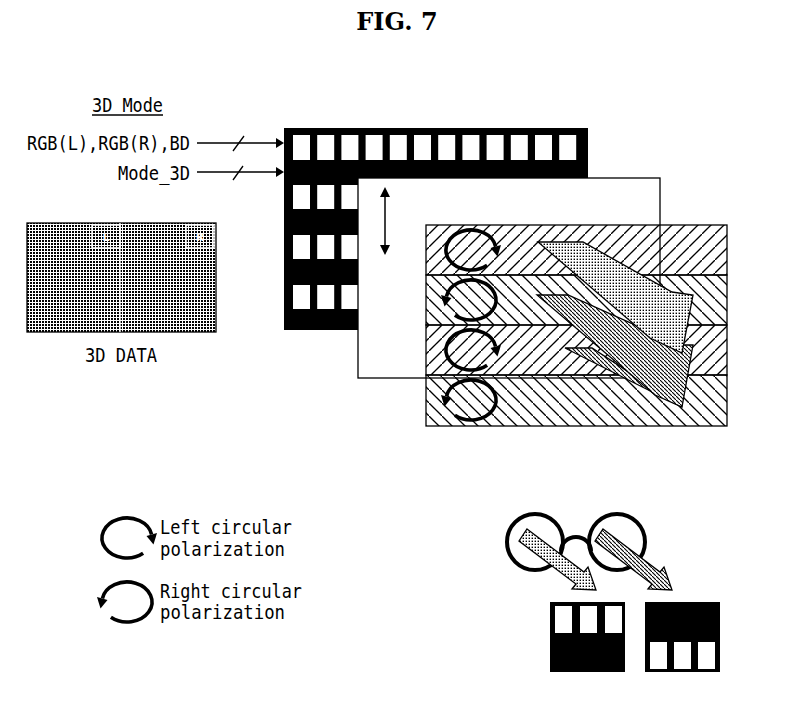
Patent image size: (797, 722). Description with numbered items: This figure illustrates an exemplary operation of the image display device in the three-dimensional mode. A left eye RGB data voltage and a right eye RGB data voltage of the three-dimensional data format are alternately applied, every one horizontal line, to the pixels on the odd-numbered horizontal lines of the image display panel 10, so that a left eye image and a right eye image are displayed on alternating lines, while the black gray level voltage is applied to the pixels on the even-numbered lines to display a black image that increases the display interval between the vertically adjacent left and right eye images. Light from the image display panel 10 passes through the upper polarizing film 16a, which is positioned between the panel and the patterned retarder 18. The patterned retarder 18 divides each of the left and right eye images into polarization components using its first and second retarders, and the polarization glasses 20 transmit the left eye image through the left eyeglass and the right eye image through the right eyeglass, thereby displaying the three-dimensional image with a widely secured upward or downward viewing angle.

The image display panel 10 is at (580, 127).
The upper polarizing film 16a is at (630, 177).
The patterned retarder 18 is at (696, 225).
The polarization glasses 20 is at (644, 530).